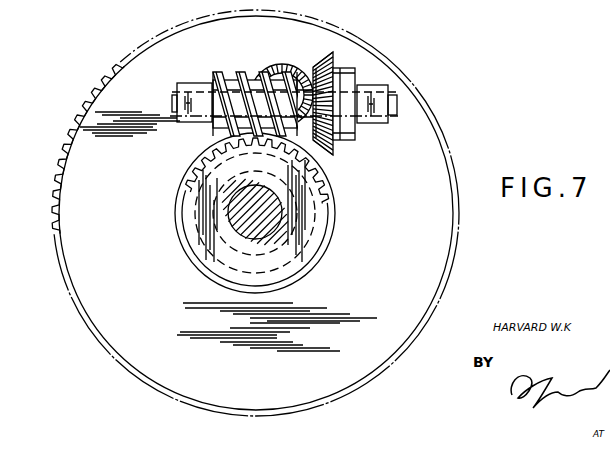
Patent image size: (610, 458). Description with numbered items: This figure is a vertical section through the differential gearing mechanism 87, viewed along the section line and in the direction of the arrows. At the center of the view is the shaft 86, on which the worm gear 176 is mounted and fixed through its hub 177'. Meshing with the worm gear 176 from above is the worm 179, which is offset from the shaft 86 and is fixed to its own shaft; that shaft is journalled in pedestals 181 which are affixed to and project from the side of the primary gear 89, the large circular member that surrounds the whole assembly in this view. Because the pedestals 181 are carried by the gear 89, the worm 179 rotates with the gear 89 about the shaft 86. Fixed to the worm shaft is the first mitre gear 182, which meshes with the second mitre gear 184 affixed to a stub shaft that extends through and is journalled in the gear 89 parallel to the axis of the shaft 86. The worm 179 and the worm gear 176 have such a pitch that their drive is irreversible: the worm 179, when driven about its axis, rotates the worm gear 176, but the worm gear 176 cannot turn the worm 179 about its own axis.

The primary gear 89 is at (424, 150).
The worm gear 176 is at (333, 200).
The shaft 86 is at (229, 216).
The hub 177' is at (319, 277).
The second mitre gear 184 is at (285, 64).
The worm 179 is at (212, 50).
The first mitre gear 182 is at (328, 54).
The pedestals 181 is at (181, 84).
The differential gearing mechanism 87 is at (186, 149).